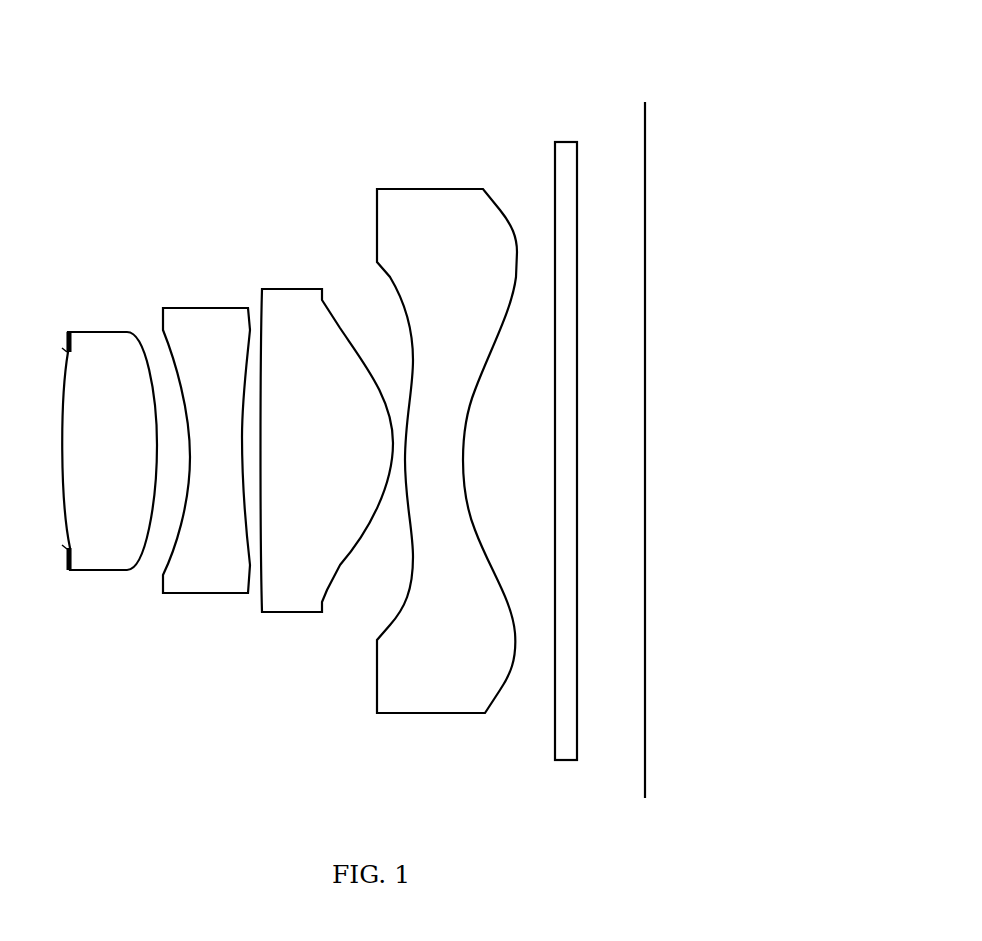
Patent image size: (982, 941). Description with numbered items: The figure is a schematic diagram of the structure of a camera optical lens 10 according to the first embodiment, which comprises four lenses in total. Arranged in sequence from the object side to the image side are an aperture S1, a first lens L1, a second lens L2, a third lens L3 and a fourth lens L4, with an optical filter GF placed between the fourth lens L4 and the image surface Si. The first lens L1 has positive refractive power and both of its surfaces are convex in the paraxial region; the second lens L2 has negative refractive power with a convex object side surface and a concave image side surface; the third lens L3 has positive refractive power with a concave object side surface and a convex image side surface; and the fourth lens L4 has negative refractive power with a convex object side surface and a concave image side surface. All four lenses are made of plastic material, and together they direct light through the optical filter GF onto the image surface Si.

The camera optical lens 10 is at (375, 49).
The aperture S1 is at (55, 448).
The first lens L1 is at (109, 438).
The second lens L2 is at (206, 437).
The third lens L3 is at (327, 438).
The fourth lens L4 is at (447, 438).
The optical filter GF is at (566, 439).
The image surface Si is at (646, 438).